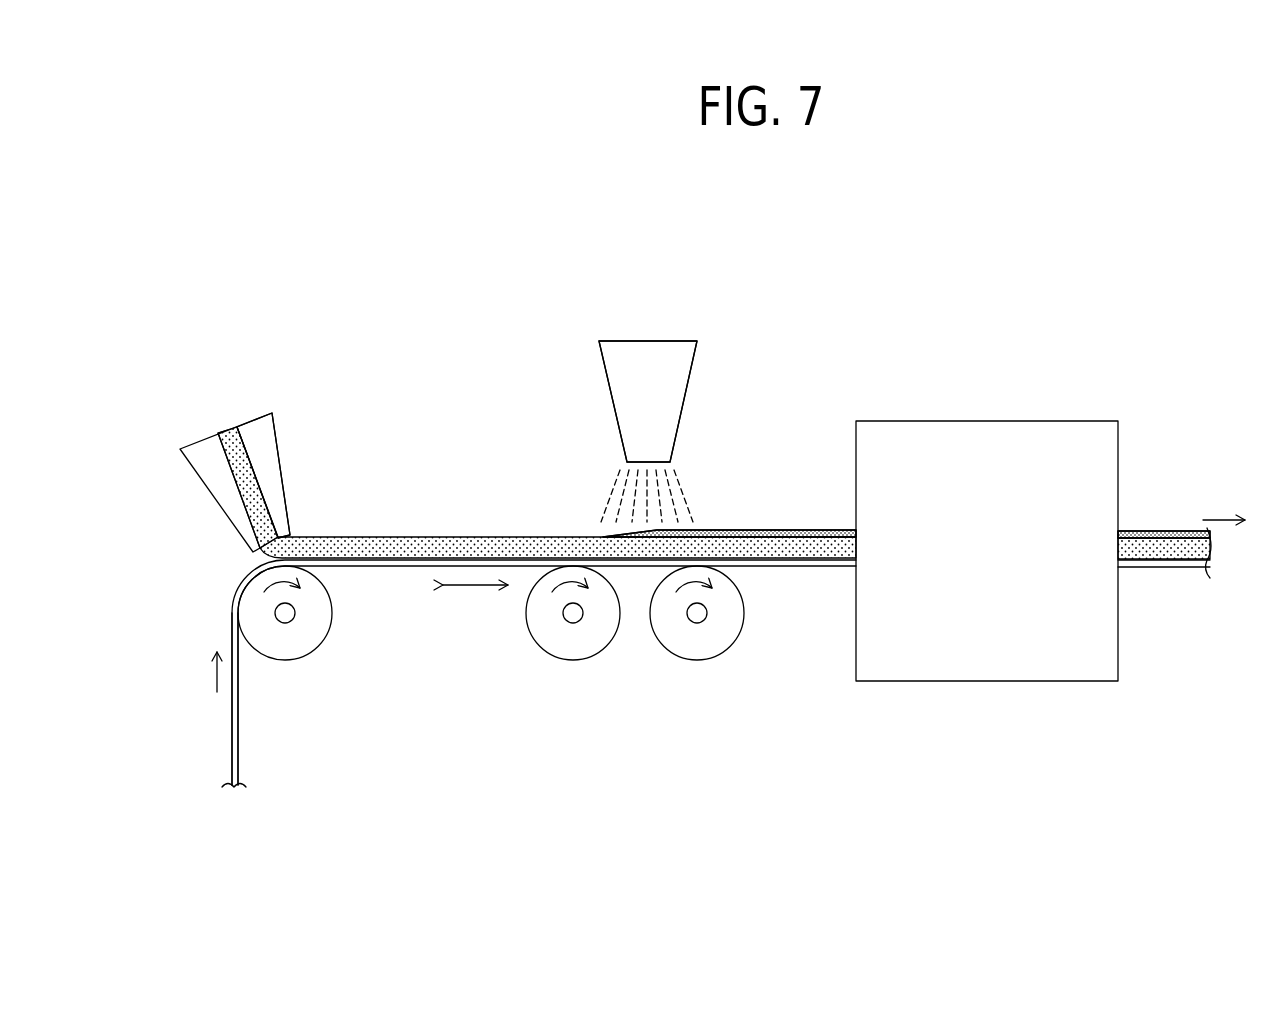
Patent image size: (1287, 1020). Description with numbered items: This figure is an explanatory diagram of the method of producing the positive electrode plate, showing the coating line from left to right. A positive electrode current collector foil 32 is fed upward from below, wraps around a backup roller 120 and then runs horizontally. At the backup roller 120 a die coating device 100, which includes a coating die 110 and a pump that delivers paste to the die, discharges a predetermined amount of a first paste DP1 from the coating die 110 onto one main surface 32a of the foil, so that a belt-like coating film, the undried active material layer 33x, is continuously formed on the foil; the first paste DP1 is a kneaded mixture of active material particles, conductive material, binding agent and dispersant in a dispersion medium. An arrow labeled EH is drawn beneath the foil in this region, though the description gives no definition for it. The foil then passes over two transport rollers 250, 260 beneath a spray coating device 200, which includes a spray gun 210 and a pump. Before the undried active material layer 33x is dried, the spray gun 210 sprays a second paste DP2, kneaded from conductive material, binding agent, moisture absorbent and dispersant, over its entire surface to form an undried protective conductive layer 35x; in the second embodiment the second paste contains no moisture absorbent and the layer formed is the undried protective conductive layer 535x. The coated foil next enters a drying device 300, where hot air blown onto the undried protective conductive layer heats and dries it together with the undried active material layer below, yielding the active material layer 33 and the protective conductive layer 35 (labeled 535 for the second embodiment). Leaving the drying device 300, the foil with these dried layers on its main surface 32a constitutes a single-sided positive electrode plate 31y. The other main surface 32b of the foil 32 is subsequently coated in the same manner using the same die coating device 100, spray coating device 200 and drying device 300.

The die coating device 100 is at (219, 422).
The coating die 110 is at (268, 448).
The first paste DP1 is at (257, 497).
The undried active material layer 33x is at (405, 548).
The undried protective conductive layer 35x is at (803, 527).
The undried protective conductive layer 535x is at (729, 533).
The protective conductive layer 35 is at (1155, 533).
The second layer 535 is at (1164, 534).
The active material layer 33 is at (1180, 550).
The positive electrode current collector foil 32 is at (423, 567).
The main surface 32a is at (233, 712).
The other main surface 32b is at (240, 713).
The single-sided positive electrode plate 31y is at (1167, 568).
The backup roller 120 is at (310, 623).
The conveyance direction EH is at (475, 604).
The transport roller 250 is at (586, 645).
The transport roller 260 is at (703, 640).
The spray coating device 200 is at (648, 335).
The spray gun 210 is at (620, 375).
The second paste DP2 is at (680, 485).
The drying device 300 is at (1042, 420).